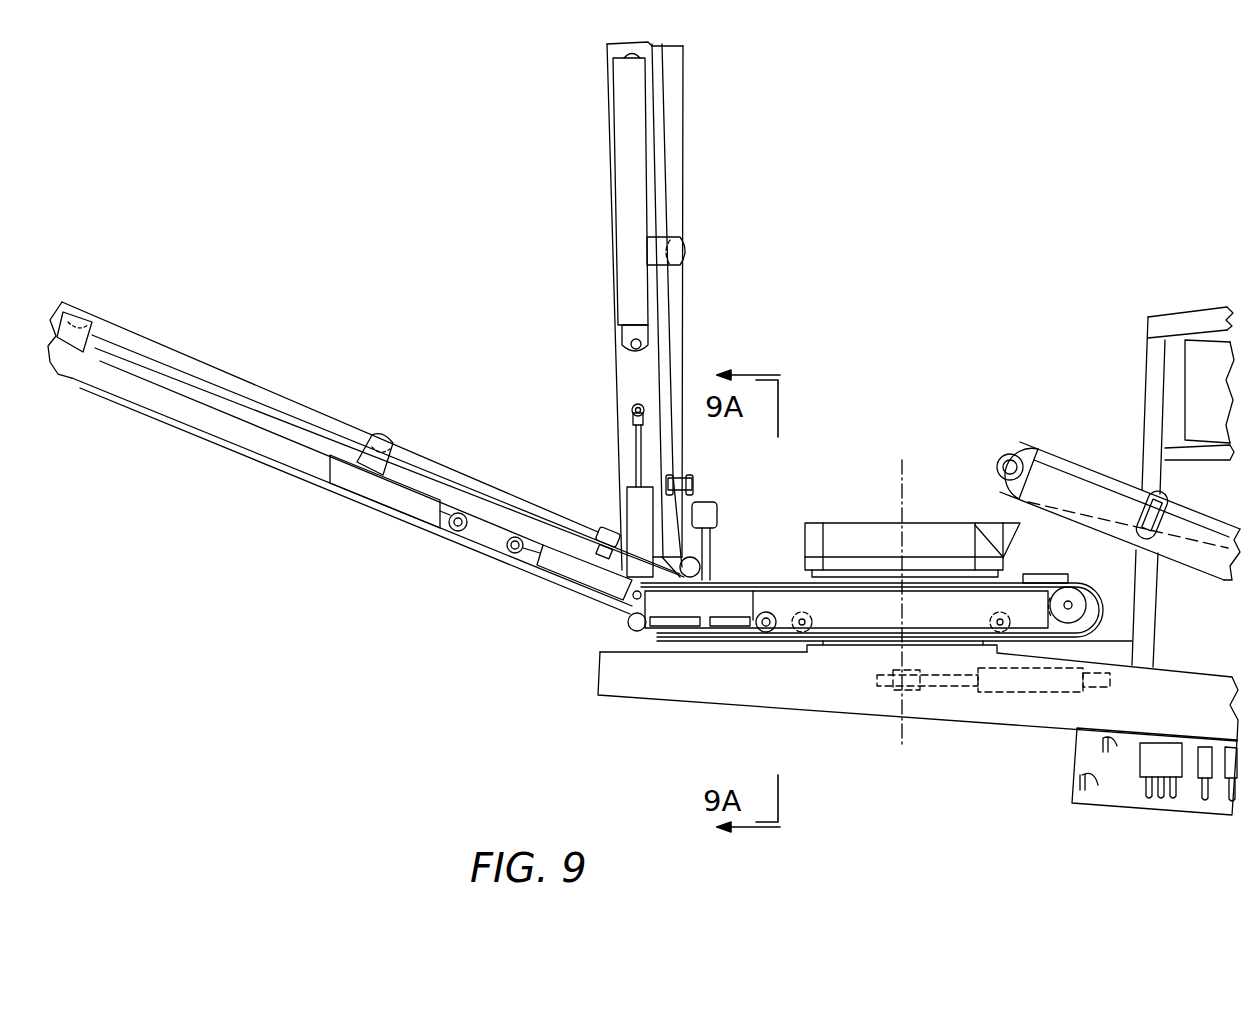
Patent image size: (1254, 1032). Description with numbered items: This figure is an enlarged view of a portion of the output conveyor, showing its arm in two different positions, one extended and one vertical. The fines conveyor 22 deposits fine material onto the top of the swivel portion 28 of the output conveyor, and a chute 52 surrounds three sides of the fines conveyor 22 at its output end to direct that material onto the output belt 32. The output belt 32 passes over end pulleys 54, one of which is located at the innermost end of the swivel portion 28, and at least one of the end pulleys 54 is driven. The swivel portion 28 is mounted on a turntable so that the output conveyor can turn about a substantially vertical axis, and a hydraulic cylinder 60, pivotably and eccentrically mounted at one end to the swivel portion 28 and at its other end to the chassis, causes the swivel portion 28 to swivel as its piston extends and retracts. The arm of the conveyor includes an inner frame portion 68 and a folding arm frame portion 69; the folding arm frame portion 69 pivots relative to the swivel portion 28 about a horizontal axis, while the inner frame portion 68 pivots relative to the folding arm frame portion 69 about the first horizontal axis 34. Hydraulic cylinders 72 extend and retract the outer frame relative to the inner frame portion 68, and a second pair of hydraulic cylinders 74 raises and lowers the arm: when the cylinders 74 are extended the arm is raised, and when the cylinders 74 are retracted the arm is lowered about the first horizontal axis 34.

The fines conveyor 22 is at (1062, 442).
The swivel portion 28 is at (863, 478).
The output belt 32 is at (745, 580).
The first horizontal axis 34 is at (690, 578).
The chute 52 is at (937, 533).
The end pulleys 54 is at (1068, 605).
The hydraulic cylinder 60 is at (1022, 693).
The inner frame portion 68 is at (473, 545).
The folding arm frame portion 69 is at (713, 538).
The hydraulic cylinders 72 is at (287, 458).
The second pair of hydraulic cylinders 74 is at (620, 503).